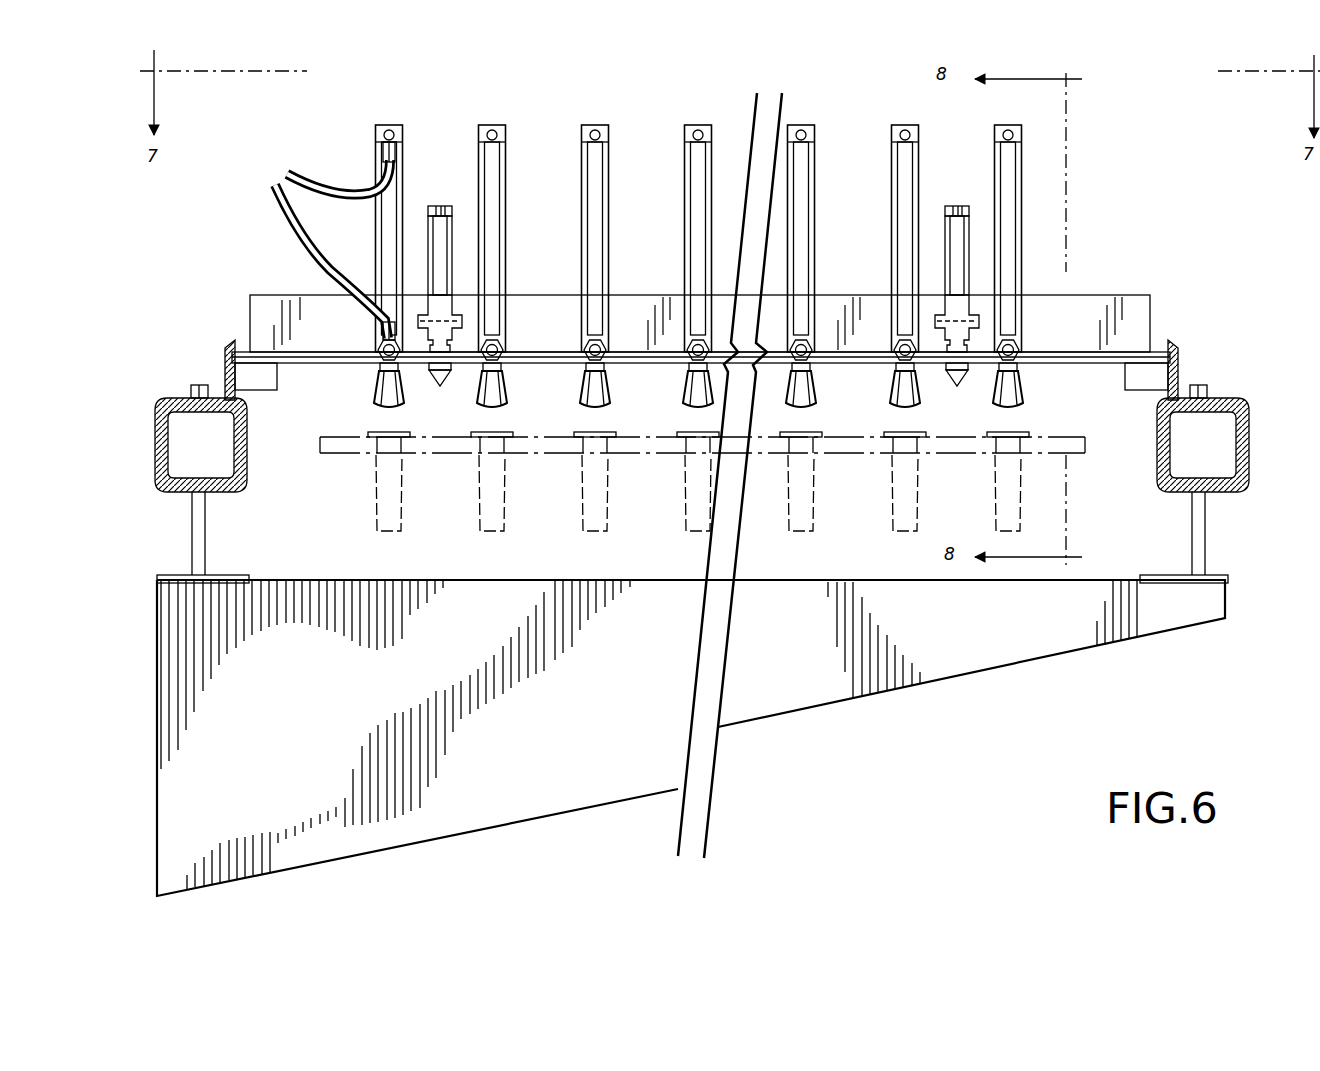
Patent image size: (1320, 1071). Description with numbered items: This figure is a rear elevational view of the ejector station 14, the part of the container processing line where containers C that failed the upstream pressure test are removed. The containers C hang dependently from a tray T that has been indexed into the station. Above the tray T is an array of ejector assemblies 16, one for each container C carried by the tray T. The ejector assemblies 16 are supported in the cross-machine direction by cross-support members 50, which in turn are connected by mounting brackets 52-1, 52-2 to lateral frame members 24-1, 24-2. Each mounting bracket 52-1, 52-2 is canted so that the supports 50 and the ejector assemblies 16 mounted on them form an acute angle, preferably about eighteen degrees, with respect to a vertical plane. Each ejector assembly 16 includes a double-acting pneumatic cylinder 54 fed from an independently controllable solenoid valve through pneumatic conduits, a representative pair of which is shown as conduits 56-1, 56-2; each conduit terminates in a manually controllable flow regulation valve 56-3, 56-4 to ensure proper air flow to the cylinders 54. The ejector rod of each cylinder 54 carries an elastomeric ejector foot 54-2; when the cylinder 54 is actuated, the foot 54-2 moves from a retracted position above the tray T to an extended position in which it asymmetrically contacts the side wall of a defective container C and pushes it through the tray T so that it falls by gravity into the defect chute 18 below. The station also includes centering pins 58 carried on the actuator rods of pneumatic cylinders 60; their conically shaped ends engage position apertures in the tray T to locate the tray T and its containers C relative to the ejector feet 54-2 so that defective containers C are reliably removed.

The ejector station 14 is at (1150, 210).
The ejector assemblies 16 is at (408, 142).
The defect chute 18 is at (298, 722).
The lateral frame member 24-1 is at (1160, 492).
The lateral frame member 24-2 is at (240, 492).
The cross-support members 50 is at (1062, 324).
The mounting bracket 52-1 is at (1180, 362).
The mounting bracket 52-2 is at (223, 362).
The double-acting pneumatic cylinder 54 is at (388, 243).
The elastomeric ejector foot 54-2 is at (374, 386).
The pneumatic conduit 56-1 is at (292, 216).
The pneumatic conduit 56-2 is at (320, 170).
The manually controllable flow regulation valve 56-3 is at (382, 346).
The manually controllable flow regulation valve 56-4 is at (380, 128).
The centering pins 58 is at (432, 376).
The pneumatic cylinders 60 is at (440, 222).
The tray T is at (338, 455).
The containers C is at (478, 505).